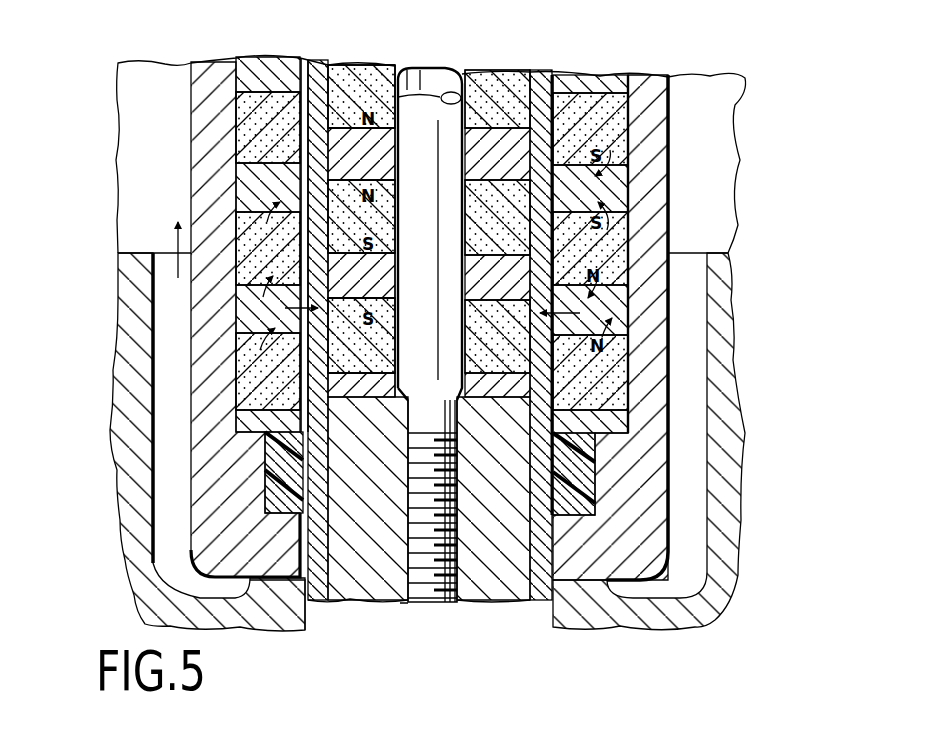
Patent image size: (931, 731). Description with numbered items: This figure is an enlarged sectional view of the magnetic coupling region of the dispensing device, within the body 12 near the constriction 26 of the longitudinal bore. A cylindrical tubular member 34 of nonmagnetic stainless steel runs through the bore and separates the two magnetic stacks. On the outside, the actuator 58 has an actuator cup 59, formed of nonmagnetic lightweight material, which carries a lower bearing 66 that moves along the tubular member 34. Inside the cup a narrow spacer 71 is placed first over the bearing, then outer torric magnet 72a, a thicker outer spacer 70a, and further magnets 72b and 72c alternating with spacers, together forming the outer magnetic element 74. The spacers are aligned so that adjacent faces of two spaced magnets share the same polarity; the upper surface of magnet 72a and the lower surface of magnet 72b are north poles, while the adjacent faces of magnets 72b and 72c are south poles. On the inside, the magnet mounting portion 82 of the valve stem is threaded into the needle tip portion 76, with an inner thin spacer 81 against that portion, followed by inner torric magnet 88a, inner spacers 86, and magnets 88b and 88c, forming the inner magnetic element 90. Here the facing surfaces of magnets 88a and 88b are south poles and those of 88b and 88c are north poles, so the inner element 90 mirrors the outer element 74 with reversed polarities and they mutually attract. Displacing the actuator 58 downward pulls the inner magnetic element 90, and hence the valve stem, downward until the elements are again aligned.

The body 12 is at (123, 387).
The constriction 26 is at (267, 610).
The cylindrical tubular member 34 is at (318, 68).
The actuator 58 is at (681, 485).
The actuator cup 59 is at (203, 292).
The lower bearing 66 is at (583, 507).
The outer spacer 70a is at (627, 322).
The narrow spacer 71 is at (615, 423).
The outer torric magnet 72a is at (627, 380).
The outer torric magnet 72b is at (627, 247).
The outer torric magnet 72c is at (627, 132).
The outer magnetic element 74 is at (679, 228).
The needle tip portion 76 is at (358, 582).
The inner thin spacer 81 is at (500, 388).
The magnet mounting portion 82 is at (435, 598).
The inner spacer 86 is at (335, 148).
The inner torric magnet 88a is at (337, 353).
The inner torric magnet 88b is at (337, 197).
The inner torric magnet 88c is at (342, 110).
The inner magnetic element 90 is at (370, 62).